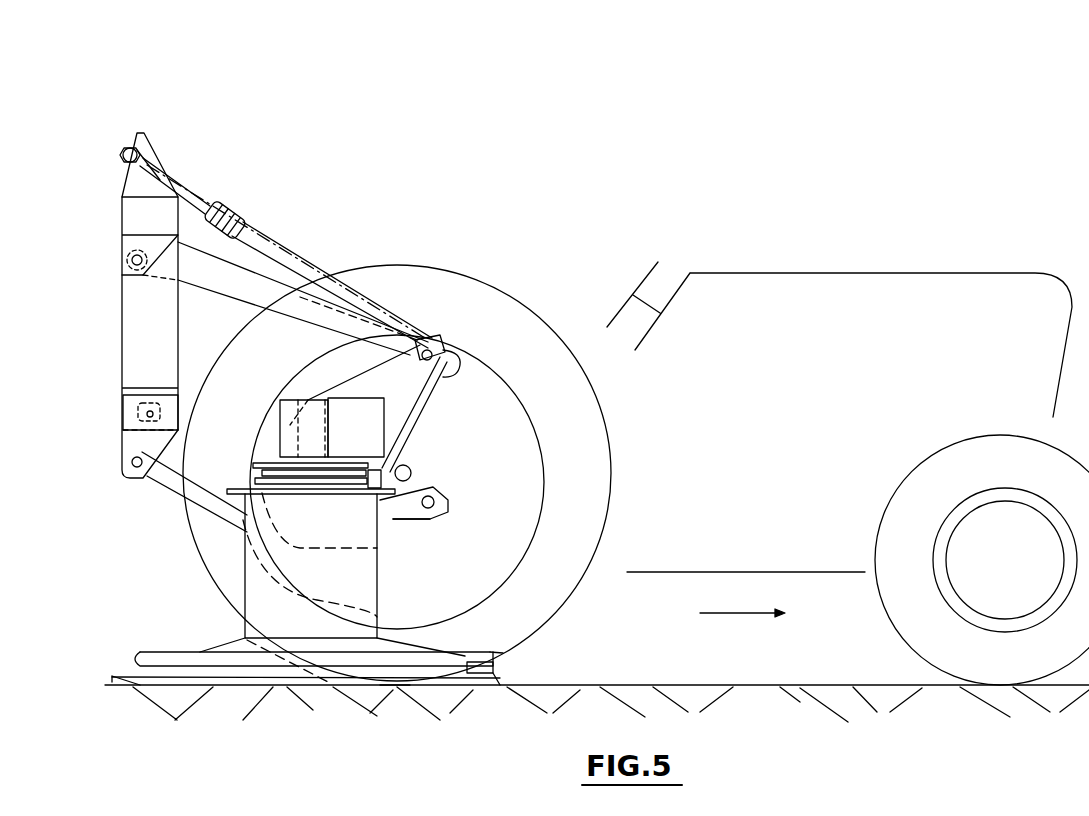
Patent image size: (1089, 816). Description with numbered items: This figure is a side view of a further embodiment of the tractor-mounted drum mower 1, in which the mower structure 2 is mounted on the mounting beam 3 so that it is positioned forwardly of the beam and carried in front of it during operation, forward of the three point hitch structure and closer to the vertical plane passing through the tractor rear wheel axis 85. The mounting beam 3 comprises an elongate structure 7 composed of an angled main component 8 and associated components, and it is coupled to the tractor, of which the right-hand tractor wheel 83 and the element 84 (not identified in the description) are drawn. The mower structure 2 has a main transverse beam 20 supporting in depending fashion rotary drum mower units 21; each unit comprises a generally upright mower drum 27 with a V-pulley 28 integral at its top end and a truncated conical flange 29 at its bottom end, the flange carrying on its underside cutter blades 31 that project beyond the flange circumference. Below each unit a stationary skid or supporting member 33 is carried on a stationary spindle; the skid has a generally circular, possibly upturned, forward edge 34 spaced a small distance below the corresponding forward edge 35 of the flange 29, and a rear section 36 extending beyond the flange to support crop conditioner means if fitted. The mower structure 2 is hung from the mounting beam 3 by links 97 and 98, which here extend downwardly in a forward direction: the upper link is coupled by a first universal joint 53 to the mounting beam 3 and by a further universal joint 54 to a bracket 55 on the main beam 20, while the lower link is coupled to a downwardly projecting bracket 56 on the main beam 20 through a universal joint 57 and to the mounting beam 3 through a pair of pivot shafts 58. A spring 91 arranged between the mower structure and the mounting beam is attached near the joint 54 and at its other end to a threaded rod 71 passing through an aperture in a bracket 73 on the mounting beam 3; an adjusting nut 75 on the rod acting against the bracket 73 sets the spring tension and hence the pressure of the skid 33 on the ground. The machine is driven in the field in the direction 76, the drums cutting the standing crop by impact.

The drum mower 1 is at (325, 228).
The mower structure 2 is at (162, 578).
The mounting beam 3 is at (100, 359).
The elongate structure 7 is at (94, 258).
The angled main component 8 is at (123, 417).
The main transverse beam 20 is at (386, 427).
The rotary drum mower unit 21 is at (388, 597).
The mower drum 27 is at (380, 572).
The V-pulley 28 is at (378, 478).
The truncated conical flange 29 is at (465, 657).
The cutter blade 31 is at (503, 671).
The stationary skid 33 is at (393, 693).
The forward edge of skid 34 is at (507, 693).
The forward edge of flange 35 is at (503, 653).
The rear section of skid 36 is at (125, 687).
The first universal joint 53 is at (132, 266).
The further universal joint 54 is at (445, 343).
The bracket 55 is at (422, 397).
The bracket 56 is at (445, 503).
The universal joint 57 is at (436, 517).
The pivot shafts 58 is at (132, 468).
The threaded rod 71 is at (193, 196).
The bracket 73 is at (152, 158).
The adjusting nut 75 is at (123, 162).
The direction of travel 76 is at (746, 615).
The right-hand tractor wheel 83 is at (578, 604).
The tractor body 84 is at (867, 273).
The tractor rear wheel axis 85 is at (413, 473).
The spring 91 is at (405, 310).
The link 97 is at (228, 298).
The link 98 is at (380, 540).